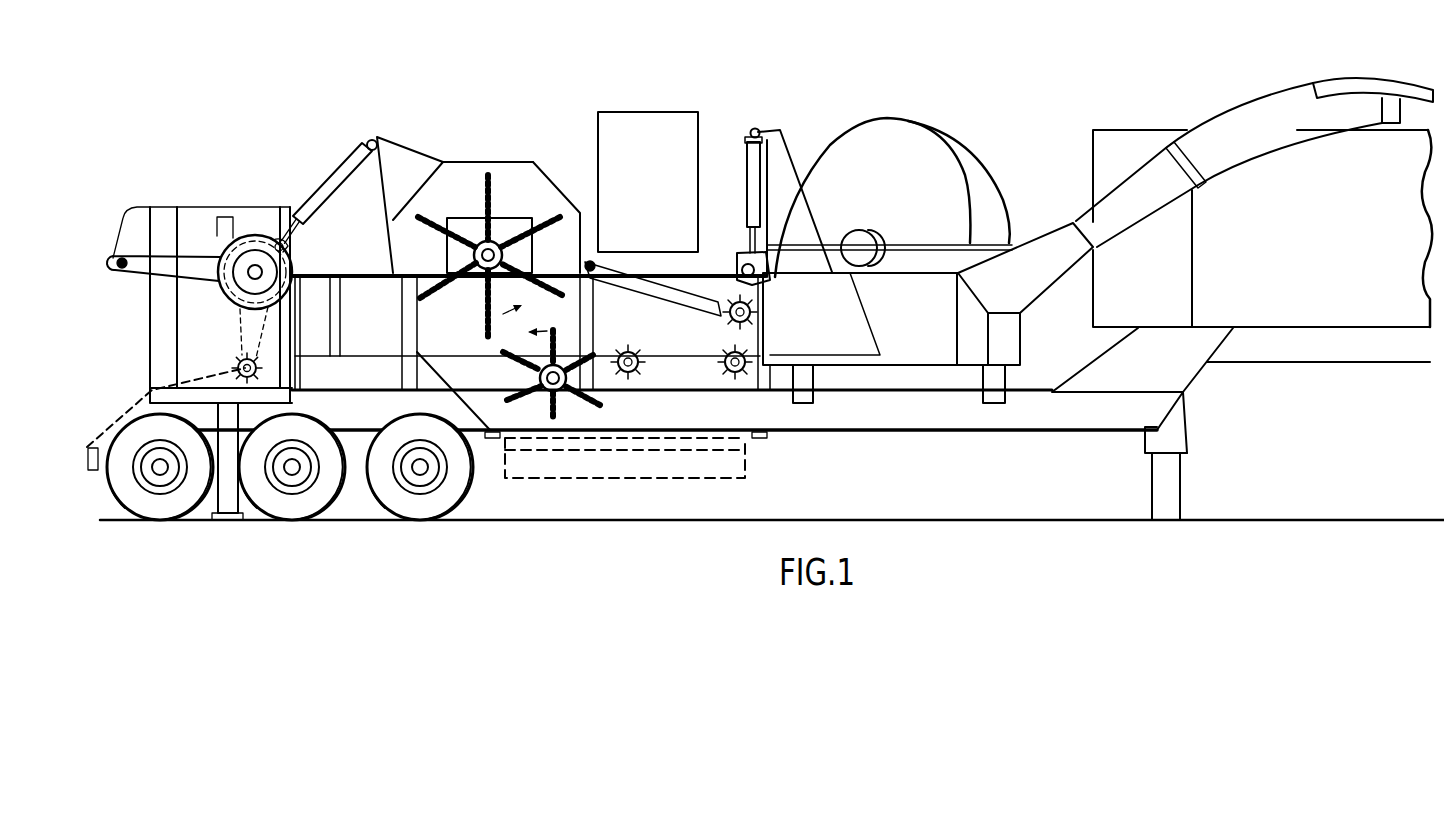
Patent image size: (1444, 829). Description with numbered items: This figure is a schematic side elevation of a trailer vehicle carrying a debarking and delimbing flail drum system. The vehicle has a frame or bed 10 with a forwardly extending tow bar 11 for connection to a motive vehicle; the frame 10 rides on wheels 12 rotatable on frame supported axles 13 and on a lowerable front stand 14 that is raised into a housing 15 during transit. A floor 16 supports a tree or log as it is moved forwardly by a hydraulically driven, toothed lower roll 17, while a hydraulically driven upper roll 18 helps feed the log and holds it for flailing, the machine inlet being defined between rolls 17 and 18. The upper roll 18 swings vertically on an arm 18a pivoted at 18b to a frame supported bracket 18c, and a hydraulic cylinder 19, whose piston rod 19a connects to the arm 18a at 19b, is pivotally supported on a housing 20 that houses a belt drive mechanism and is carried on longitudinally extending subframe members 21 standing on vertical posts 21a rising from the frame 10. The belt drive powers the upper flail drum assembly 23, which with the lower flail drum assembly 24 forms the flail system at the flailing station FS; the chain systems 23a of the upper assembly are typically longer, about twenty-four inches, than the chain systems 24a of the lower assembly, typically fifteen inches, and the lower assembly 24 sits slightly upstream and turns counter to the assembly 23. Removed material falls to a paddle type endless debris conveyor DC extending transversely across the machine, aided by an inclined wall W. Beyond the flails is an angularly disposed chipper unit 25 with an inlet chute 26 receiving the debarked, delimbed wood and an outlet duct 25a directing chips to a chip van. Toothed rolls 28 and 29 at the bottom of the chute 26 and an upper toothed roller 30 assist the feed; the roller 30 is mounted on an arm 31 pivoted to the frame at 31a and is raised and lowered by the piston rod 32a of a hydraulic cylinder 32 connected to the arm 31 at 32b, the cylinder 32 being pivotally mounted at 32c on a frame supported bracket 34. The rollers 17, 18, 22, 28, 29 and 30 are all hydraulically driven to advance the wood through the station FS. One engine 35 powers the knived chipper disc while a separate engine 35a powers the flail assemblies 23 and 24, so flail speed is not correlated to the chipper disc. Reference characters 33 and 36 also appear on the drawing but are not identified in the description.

The frame or bed 10 is at (944, 415).
The tow bar 11 is at (1370, 364).
The wheels 12 is at (400, 423).
The axles 13 is at (297, 471).
The front stand 14 is at (1178, 488).
The housing 15 is at (1173, 440).
The floor 16 is at (373, 357).
The lower roll 17 is at (236, 362).
The upper roll 18 is at (255, 296).
The arm 18a is at (150, 272).
The pivot 18b is at (120, 270).
The bracket 18c is at (124, 218).
The hydraulic cylinder 19 is at (343, 178).
The piston rod 19a is at (295, 210).
The connection point 19b is at (293, 255).
The housing 20 is at (448, 175).
The subframe members 21 is at (558, 275).
The vertical posts 21a is at (590, 302).
The roller 22 is at (317, 303).
The upper flail drum assembly 23 is at (505, 230).
The chain systems 23a is at (547, 220).
The lower flail drum assembly 24 is at (578, 406).
The chain systems 24a is at (533, 430).
The chipper unit 25 is at (904, 199).
The outlet duct 25a is at (1240, 125).
The inlet chute 26 is at (857, 310).
The toothed roll 28 is at (646, 368).
The toothed roll 29 is at (718, 367).
The upper toothed roller 30 is at (727, 318).
The arm 31 is at (653, 287).
The pivot 31a is at (596, 262).
The hydraulic cylinder 32 is at (746, 158).
The piston rod 32a is at (743, 227).
The connection point 32b is at (766, 290).
The pivotal mount 32c is at (760, 129).
The feed table 33 is at (713, 260).
The bracket 34 is at (786, 157).
The engine 35 is at (1372, 234).
The engine 35a is at (652, 122).
The upper flail drum 36 is at (476, 257).
The inclined wall W is at (455, 388).
The flailing station FS is at (490, 364).
The debris conveyor DC is at (676, 484).